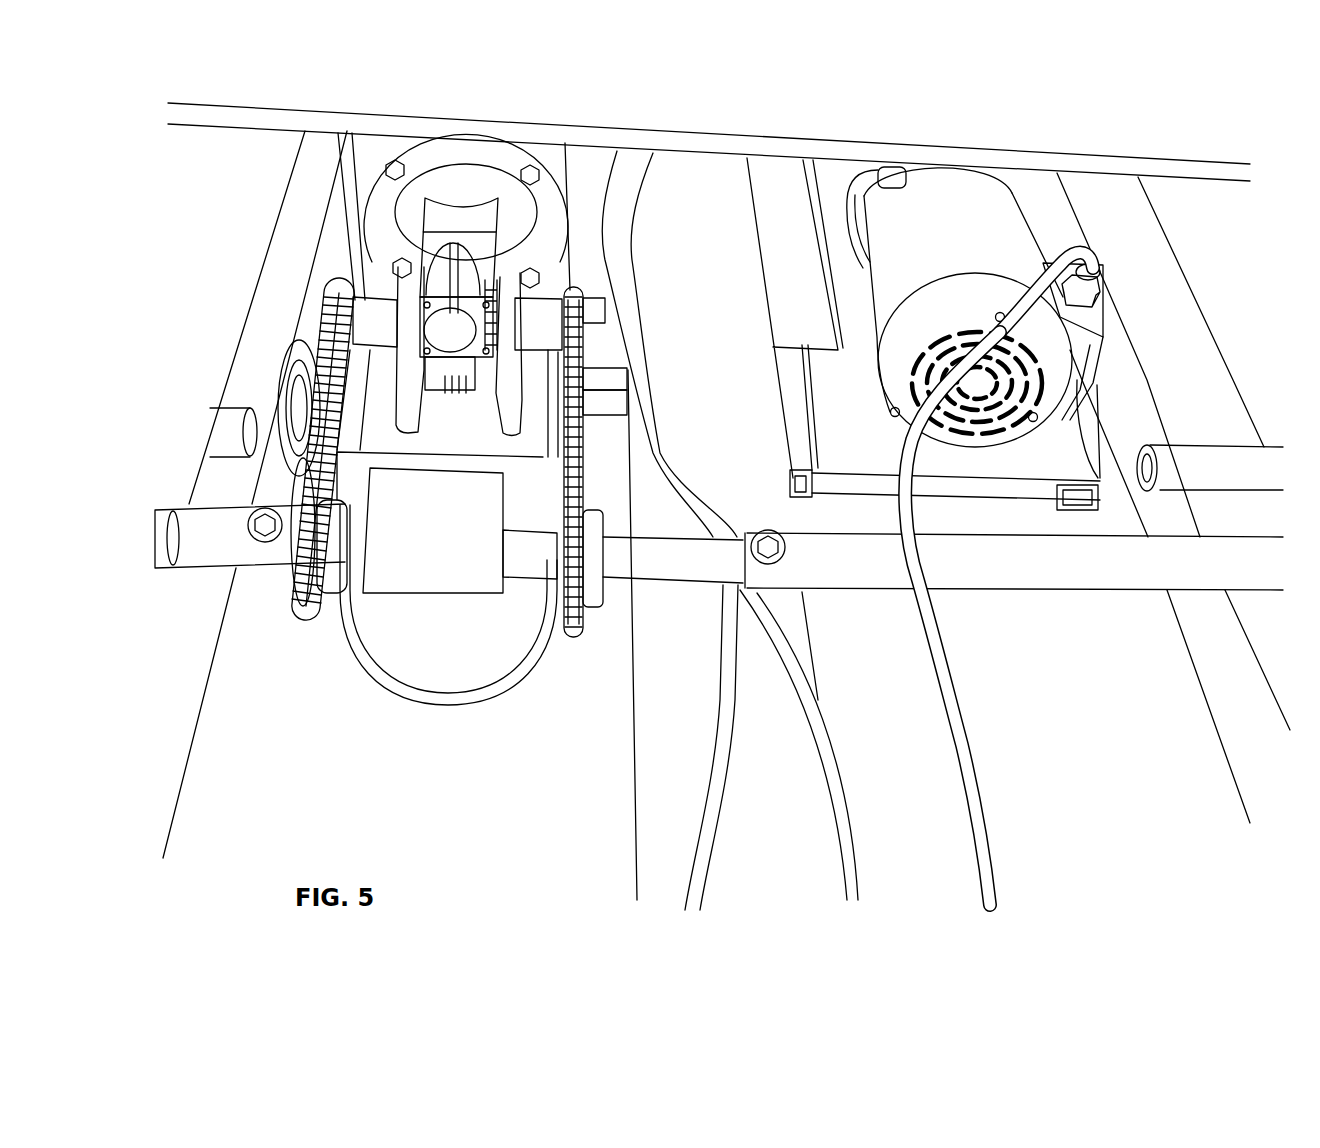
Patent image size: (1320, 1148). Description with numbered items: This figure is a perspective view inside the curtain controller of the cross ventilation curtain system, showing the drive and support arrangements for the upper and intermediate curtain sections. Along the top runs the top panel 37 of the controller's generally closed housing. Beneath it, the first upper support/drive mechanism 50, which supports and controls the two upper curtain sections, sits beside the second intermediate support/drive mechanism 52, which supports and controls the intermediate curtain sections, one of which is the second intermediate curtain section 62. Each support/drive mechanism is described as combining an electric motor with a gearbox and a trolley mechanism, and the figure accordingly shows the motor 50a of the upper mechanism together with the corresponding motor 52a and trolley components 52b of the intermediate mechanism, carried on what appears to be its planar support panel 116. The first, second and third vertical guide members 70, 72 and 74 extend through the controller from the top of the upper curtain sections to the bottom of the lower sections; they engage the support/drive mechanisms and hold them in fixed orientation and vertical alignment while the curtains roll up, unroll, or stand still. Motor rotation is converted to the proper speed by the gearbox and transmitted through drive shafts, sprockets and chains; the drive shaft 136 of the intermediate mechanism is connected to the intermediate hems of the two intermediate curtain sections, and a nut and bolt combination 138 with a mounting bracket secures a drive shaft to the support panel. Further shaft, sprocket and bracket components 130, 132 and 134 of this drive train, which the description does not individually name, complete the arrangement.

The top panel 37 is at (976, 157).
The first upper support/drive mechanism 50 is at (1105, 265).
The electric motor 50a is at (930, 251).
The second intermediate support/drive mechanism 52 is at (325, 285).
The gear reducer flange 52a is at (427, 162).
The drive sprocket 52b is at (301, 489).
The second intermediate curtain section 62 is at (158, 558).
The first vertical guide member 70 is at (260, 335).
The second vertical guide member 72 is at (676, 291).
The third vertical guide member 74 is at (1173, 337).
The motor mount plate 116 is at (831, 441).
The bearing hub 130 is at (275, 432).
The cross rod 132 is at (1103, 505).
The drive shaft sprocket 134 is at (540, 565).
The drive shaft 136 is at (265, 552).
The nut and bolt combination 138 is at (1015, 570).